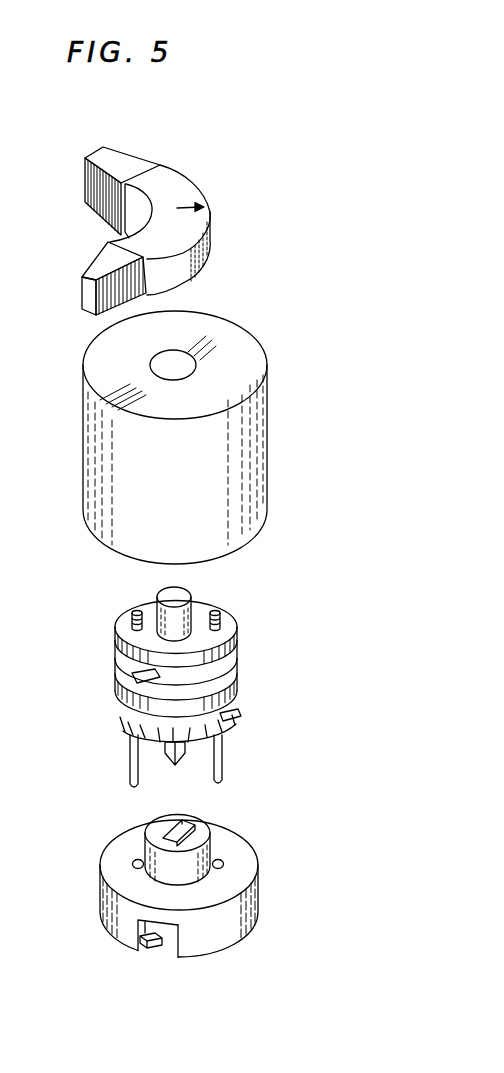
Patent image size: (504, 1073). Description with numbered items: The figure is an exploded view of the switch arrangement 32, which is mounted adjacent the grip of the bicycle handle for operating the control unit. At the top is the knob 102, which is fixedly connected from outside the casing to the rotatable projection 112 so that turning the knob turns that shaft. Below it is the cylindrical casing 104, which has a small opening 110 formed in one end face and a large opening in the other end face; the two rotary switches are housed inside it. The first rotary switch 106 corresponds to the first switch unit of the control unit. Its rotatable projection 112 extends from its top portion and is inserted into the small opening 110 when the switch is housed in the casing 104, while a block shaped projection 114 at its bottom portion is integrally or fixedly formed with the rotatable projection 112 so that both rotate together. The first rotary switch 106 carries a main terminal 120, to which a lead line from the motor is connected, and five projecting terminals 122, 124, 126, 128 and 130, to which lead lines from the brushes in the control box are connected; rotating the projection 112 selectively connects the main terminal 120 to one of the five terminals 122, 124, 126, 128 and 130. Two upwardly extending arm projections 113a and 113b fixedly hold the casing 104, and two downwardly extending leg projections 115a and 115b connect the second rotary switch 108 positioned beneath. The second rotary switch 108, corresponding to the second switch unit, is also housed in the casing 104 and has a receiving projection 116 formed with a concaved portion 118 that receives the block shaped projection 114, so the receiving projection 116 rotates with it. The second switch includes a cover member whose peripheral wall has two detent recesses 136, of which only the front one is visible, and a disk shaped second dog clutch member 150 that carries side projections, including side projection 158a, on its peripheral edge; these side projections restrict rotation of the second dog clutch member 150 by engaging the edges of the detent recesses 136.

The switch arrangement 32 is at (291, 199).
The knob 102 is at (167, 193).
The cylindrical casing 104 is at (243, 452).
The small opening 110 is at (150, 356).
The first rotary switch 106 is at (246, 667).
The rotatable projection 112 is at (190, 593).
The arm projection 113a is at (133, 620).
The arm projection 113b is at (221, 619).
The main terminal 120 is at (118, 660).
The projecting terminal 122 is at (125, 712).
The projecting terminal 124 is at (128, 738).
The projecting terminal 126 is at (128, 760).
The projecting terminal 128 is at (213, 738).
The projecting terminal 130 is at (236, 703).
The block shaped projection 114 is at (188, 752).
The leg projection 115a is at (130, 772).
The leg projection 115b is at (223, 753).
The second rotary switch 108 is at (265, 888).
The concaved portion 118 is at (130, 822).
The receiving projection 116 is at (200, 833).
The detent recess 136 is at (140, 924).
The second dog clutch member 150 is at (170, 938).
The side projection 158a is at (143, 948).